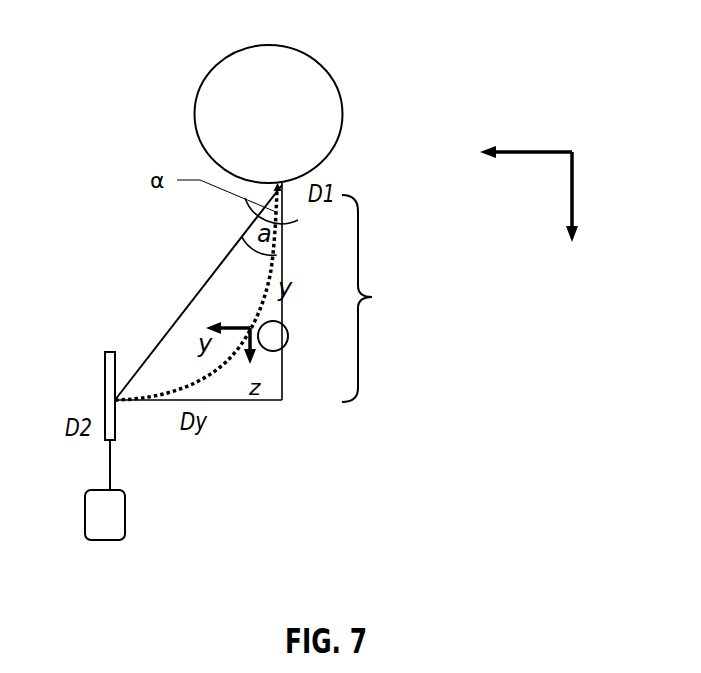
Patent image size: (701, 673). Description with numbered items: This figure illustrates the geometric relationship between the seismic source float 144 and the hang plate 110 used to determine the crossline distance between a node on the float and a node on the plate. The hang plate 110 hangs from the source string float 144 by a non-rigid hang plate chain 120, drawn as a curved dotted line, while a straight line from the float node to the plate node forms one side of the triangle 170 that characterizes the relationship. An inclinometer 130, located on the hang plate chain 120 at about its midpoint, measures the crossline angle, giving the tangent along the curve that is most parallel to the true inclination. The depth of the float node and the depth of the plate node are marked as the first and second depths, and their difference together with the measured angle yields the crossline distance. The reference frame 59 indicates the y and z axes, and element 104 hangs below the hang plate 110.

The seismic source float 144 is at (316, 102).
The triangle 170 is at (198, 292).
The hang plate chain 120 is at (280, 291).
The inclinometer 130 is at (323, 390).
The hang plate 110 is at (61, 377).
The base station 104 is at (159, 501).
The coordinate frame 59 is at (564, 194).